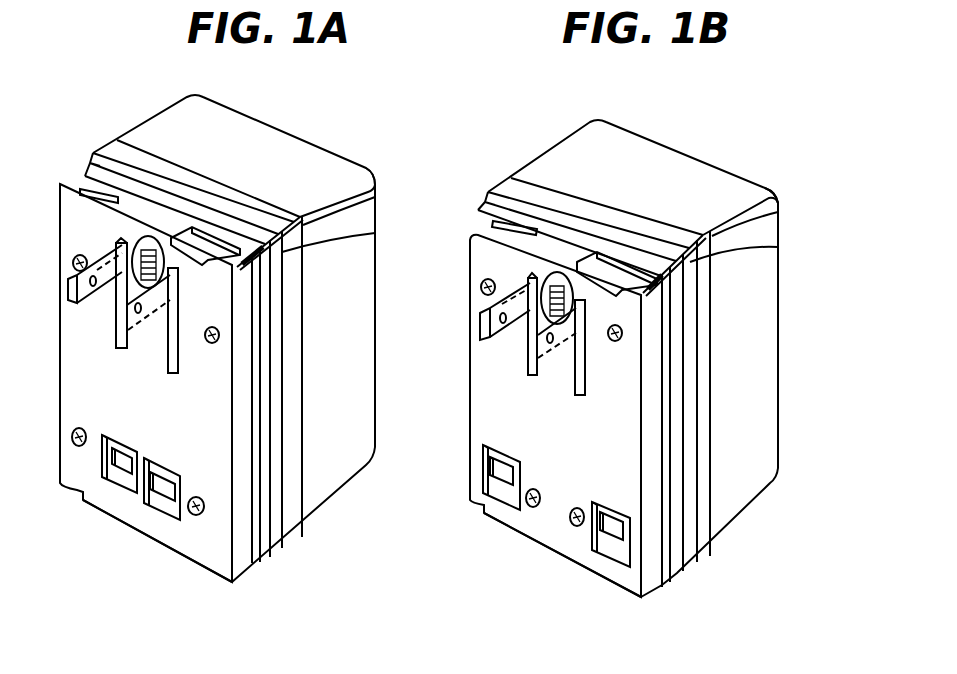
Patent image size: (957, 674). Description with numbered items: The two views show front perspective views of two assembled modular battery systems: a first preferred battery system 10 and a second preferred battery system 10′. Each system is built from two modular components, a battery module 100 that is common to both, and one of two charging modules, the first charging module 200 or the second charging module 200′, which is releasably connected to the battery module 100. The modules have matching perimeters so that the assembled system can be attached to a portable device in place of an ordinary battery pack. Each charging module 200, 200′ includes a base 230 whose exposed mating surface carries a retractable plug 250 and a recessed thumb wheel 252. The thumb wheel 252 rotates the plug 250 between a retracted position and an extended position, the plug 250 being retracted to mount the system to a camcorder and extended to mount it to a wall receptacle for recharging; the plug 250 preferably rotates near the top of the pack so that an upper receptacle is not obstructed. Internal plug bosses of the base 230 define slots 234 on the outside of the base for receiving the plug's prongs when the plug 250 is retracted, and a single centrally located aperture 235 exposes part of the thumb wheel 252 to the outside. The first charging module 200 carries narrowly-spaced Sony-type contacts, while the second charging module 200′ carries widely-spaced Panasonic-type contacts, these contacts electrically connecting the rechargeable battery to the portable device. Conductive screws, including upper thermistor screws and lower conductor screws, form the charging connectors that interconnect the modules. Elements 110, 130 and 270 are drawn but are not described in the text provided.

In FIG. 1A, the first preferred battery system 10 is at (325, 129).
In FIG. 1B, the second preferred battery system 10′ is at (707, 143).
In FIG. 1A, the battery module 100 is at (376, 468).
In FIG. 1B, the battery module 100 is at (788, 478).
In FIG. 1A, the case body 110 is at (310, 218).
In FIG. 1B, the case body 110 is at (534, 162).
In FIG. 1A, the cover 130 is at (322, 176).
In FIG. 1B, the cover 130 is at (657, 147).
In FIG. 1A, the first charging module 200 is at (297, 556).
In FIG. 1B, the second charging module 200′ is at (652, 621).
In FIG. 1A, the base 230 is at (115, 223).
In FIG. 1B, the base 230 is at (483, 400).
In FIG. 1A, the slots 234 is at (178, 338).
In FIG. 1B, the slots 234 is at (577, 367).
In FIG. 1A, the aperture 235 is at (147, 240).
In FIG. 1B, the aperture 235 is at (555, 272).
In FIG. 1A, the retractable plug 250 is at (98, 263).
In FIG. 1B, the retractable plug 250 is at (533, 347).
In FIG. 1A, the thumb wheel 252 is at (162, 249).
In FIG. 1B, the thumb wheel 252 is at (560, 276).
In FIG. 1A, the rib 270 is at (280, 252).
In FIG. 1B, the rib 270 is at (513, 180).